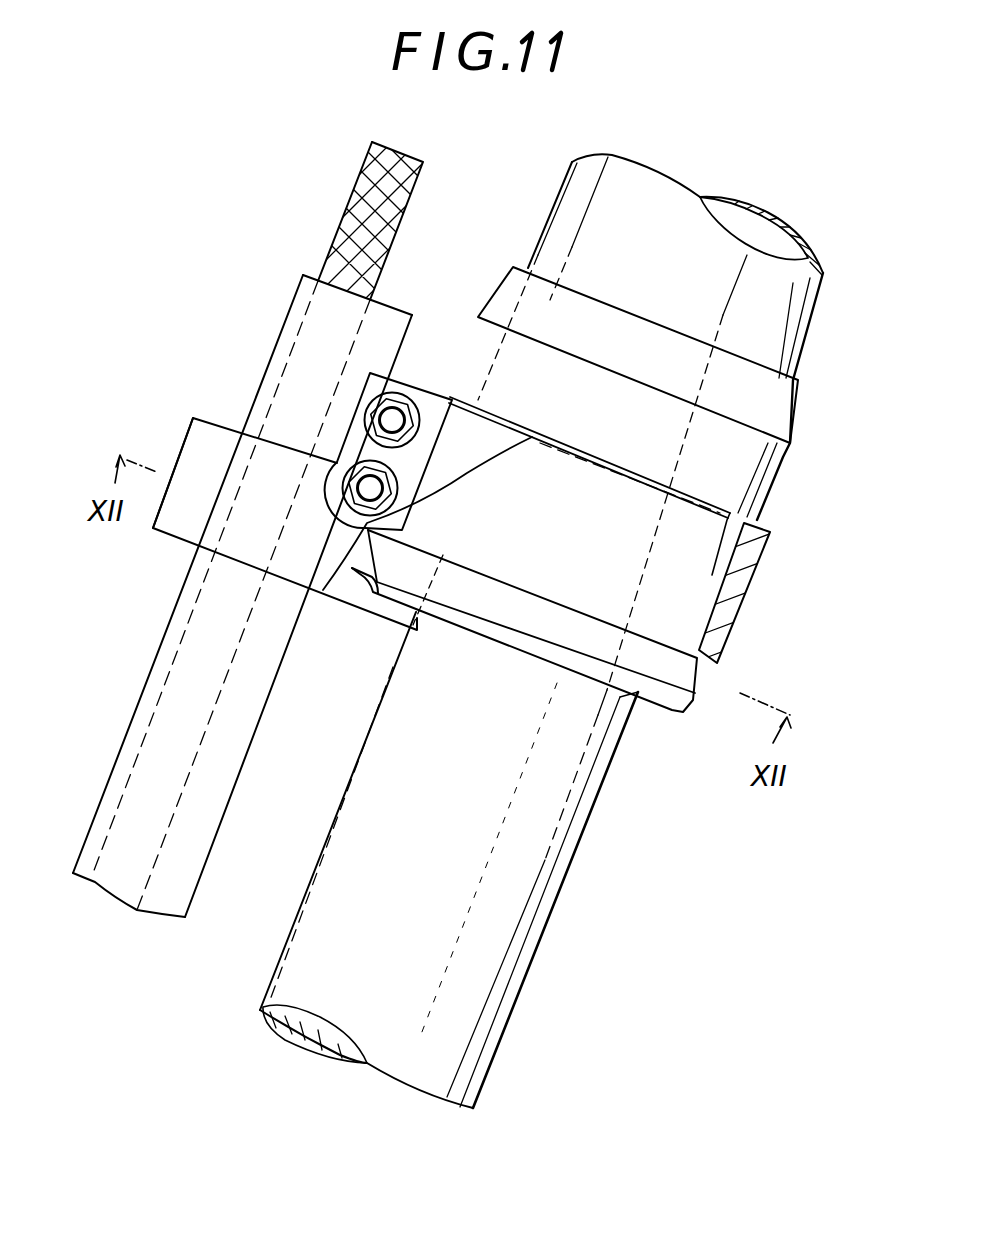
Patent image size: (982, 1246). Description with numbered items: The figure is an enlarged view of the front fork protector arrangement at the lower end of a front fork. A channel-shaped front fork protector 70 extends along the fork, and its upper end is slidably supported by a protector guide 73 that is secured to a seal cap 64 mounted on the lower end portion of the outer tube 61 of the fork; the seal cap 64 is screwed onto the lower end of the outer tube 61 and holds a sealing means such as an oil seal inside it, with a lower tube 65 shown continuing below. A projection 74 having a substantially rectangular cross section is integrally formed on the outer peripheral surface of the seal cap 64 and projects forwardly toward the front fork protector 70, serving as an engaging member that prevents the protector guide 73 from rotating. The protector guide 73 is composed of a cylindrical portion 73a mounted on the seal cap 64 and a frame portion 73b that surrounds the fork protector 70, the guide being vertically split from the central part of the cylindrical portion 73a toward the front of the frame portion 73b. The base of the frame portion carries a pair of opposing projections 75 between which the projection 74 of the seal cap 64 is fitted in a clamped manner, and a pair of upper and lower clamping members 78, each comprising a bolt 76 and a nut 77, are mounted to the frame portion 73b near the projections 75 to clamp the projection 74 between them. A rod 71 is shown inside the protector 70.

The outer tube 61 is at (780, 347).
The seal cap 64 is at (667, 710).
The pipe 65 is at (530, 938).
The front fork protector 70 is at (140, 710).
The rod 71 is at (346, 208).
The protector guide 73 is at (168, 543).
The cylindrical portion 73a is at (735, 628).
The frame portion 73b is at (247, 553).
The projection 74 is at (352, 570).
The opposing projections 75 is at (375, 615).
The bolt 76 is at (397, 407).
The nut 77 is at (412, 403).
The clamping members 78 is at (319, 370).